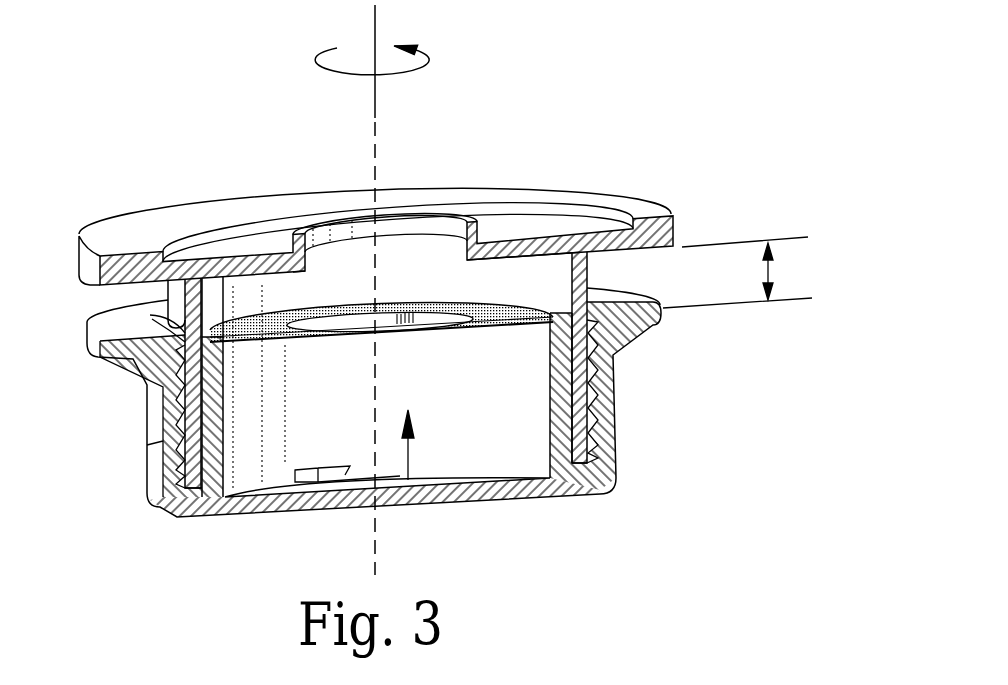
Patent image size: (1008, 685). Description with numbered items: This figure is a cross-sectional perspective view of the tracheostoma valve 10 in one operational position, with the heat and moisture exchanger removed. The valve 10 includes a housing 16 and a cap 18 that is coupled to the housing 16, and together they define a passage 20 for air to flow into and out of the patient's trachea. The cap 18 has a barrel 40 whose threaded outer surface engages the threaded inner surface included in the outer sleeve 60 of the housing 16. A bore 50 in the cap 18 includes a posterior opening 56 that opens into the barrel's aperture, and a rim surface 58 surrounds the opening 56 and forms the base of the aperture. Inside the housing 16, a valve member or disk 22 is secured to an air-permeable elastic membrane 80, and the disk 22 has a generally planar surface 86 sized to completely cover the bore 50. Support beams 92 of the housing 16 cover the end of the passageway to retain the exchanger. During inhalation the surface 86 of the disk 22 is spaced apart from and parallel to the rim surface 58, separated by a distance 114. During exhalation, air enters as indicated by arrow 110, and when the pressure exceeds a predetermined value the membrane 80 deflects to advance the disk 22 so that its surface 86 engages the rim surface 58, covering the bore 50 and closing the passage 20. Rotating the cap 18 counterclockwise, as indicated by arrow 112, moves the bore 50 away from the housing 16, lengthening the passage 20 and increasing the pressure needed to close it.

The tracheostoma valve 10 is at (610, 100).
The housing 16 is at (193, 505).
The cap 18 is at (664, 230).
The passage 20 is at (416, 241).
The valve member or disk 22 is at (388, 317).
The barrel 40 is at (583, 359).
The bore 50 is at (346, 256).
The posterior opening 56 is at (455, 259).
The rim surface 58 is at (294, 276).
The outer sleeve 60 is at (599, 424).
The elastic membrane 80 is at (268, 341).
The planar surface 86 is at (425, 314).
The support beams 92 is at (308, 469).
The arrow 110 is at (410, 462).
The arrow 112 is at (397, 75).
The distance 114 is at (768, 272).